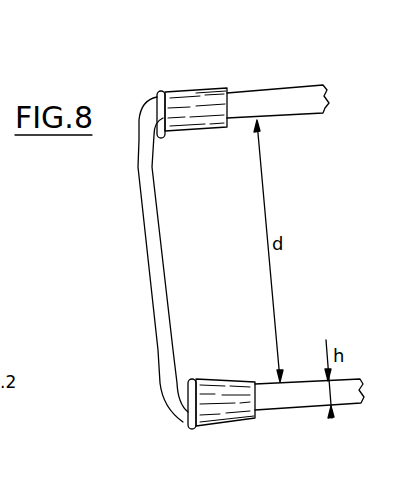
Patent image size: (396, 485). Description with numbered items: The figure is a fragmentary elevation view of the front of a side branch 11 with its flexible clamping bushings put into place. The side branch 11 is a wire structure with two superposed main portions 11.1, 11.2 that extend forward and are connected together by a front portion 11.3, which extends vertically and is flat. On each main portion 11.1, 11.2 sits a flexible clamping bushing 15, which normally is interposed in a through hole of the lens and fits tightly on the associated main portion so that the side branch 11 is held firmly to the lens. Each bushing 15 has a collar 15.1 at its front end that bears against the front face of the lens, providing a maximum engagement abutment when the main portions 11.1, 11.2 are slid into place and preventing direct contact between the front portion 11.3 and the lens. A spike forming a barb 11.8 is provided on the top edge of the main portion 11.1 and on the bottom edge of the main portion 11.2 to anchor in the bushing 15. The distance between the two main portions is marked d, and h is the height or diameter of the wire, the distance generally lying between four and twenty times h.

The side branch 11 is at (290, 88).
The main portion 11.1 is at (285, 108).
The main portion 11.2 is at (285, 400).
The front portion 11.3 is at (156, 284).
The barb 11.8 is at (199, 93).
The flexible clamping bushing 15 is at (201, 133).
The collar 15.1 is at (158, 94).